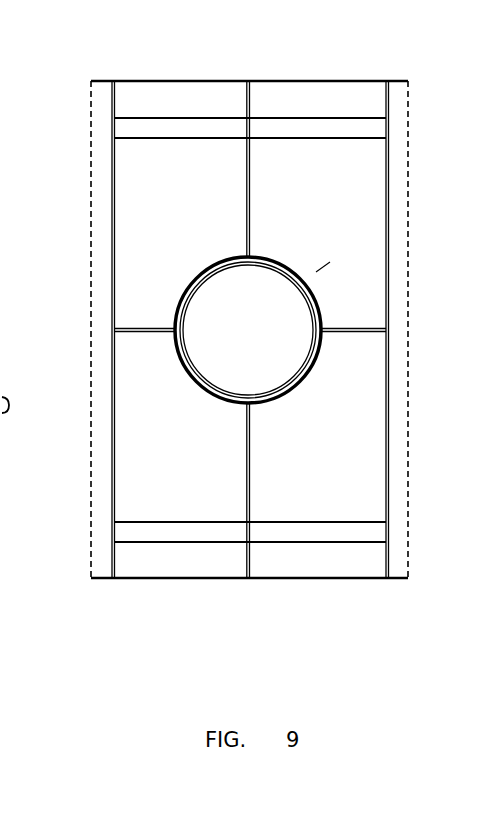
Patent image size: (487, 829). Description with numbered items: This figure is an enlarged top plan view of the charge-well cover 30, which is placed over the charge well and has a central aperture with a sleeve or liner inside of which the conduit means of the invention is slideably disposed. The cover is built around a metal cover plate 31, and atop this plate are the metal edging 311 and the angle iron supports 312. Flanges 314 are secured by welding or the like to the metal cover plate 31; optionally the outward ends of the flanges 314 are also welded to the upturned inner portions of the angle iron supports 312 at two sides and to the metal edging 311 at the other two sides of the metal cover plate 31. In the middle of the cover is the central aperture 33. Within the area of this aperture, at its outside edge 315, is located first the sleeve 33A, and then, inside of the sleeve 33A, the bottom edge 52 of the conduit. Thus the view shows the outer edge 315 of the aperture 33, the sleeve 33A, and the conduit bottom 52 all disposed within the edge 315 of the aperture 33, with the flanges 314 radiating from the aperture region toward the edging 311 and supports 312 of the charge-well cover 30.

The charge-well cover 30 is at (315, 62).
The metal cover plate 31 is at (194, 461).
The metal edging 311 is at (412, 324).
The angle iron supports 312 is at (132, 533).
The flanges 314 is at (252, 197).
The outside edge 315 is at (318, 271).
The central aperture 33 is at (228, 305).
The sleeve 33A is at (320, 303).
The bottom edge of conduit 52 is at (275, 280).